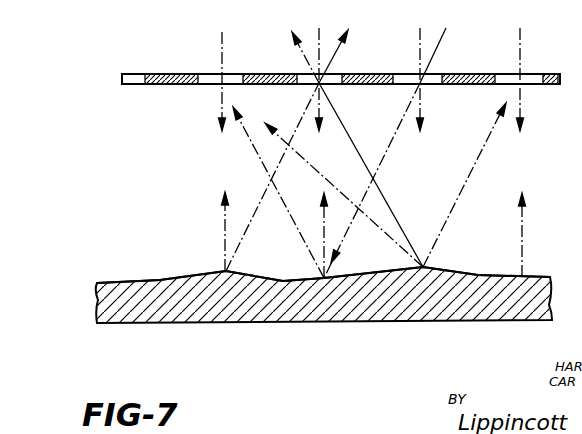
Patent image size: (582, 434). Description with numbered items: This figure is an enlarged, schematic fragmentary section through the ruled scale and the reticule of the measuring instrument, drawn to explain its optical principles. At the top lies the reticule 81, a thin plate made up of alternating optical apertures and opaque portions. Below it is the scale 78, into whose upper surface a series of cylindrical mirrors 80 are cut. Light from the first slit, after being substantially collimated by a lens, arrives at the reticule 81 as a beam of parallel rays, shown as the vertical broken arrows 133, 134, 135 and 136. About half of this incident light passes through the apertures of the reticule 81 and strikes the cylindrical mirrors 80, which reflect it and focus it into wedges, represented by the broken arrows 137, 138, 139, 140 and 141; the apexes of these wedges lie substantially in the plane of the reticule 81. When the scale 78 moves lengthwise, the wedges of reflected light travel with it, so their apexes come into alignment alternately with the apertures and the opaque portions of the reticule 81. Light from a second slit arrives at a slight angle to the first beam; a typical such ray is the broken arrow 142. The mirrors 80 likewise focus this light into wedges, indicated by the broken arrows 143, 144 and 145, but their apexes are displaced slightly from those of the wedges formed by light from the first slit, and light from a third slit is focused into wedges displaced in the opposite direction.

The scale 78 is at (97, 306).
The cylindrical mirrors 80 is at (287, 258).
The reticule 81 is at (553, 75).
The vertical broken arrow 133 is at (223, 56).
The vertical broken arrow 134 is at (319, 42).
The vertical broken arrow 135 is at (420, 44).
The vertical broken arrow 136 is at (522, 52).
The broken arrow 137 is at (255, 208).
The broken arrow 138 is at (321, 220).
The broken arrow 139 is at (383, 193).
The broken arrow 140 is at (470, 162).
The broken arrow 141 is at (520, 244).
The broken arrow 142 is at (388, 145).
The broken arrow 143 is at (224, 228).
The broken arrow 144 is at (303, 244).
The broken arrow 145 is at (392, 238).